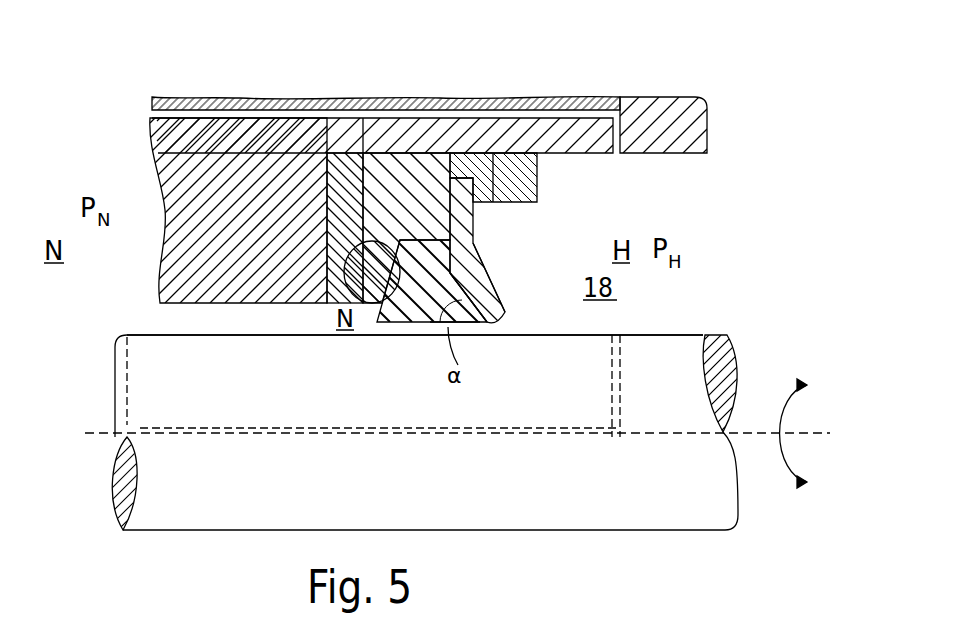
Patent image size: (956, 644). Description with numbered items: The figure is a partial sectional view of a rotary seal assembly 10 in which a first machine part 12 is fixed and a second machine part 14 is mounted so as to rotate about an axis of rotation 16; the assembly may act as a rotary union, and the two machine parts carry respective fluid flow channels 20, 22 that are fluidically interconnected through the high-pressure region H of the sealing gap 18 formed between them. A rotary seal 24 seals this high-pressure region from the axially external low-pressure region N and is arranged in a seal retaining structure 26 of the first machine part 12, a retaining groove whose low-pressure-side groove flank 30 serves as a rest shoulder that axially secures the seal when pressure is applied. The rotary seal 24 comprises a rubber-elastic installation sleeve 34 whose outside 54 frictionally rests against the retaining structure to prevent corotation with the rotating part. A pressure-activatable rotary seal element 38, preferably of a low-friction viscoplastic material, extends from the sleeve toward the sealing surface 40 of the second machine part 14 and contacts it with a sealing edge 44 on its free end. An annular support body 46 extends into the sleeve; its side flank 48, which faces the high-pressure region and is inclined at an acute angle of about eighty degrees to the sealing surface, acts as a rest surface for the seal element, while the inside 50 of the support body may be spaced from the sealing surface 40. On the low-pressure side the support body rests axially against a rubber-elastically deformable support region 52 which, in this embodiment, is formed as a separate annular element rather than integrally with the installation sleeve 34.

The rotary seal assembly 10 is at (706, 209).
The first machine part 12 is at (187, 145).
The second machine part 14 is at (447, 490).
The axis of rotation 16 is at (753, 430).
The sealing gap 18 is at (231, 321).
The fluid flow channel 20 is at (592, 102).
The fluid flow channel 22 is at (132, 437).
The rotary seal 24 is at (526, 227).
The seal retaining structure 26 is at (563, 163).
The groove flank 30 is at (372, 218).
The installation sleeve 34 is at (363, 140).
The rotary seal element 38 is at (482, 272).
The sealing surface 40 is at (674, 334).
The sealing edge 44 is at (470, 320).
The support body 46 is at (433, 312).
The side flank 48 is at (478, 292).
The inside 50 is at (405, 327).
The support region 52 is at (372, 300).
The outside 54 is at (463, 103).